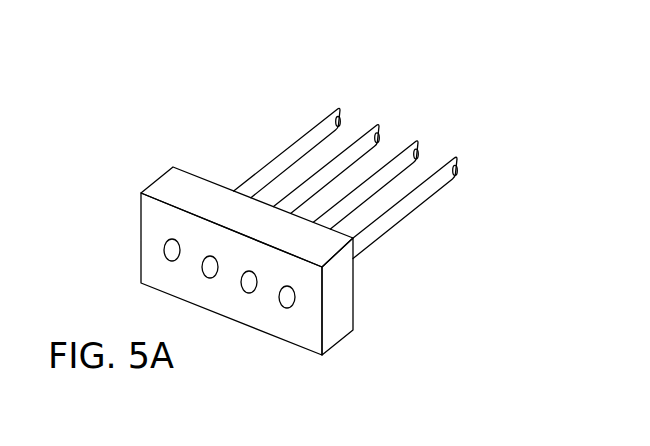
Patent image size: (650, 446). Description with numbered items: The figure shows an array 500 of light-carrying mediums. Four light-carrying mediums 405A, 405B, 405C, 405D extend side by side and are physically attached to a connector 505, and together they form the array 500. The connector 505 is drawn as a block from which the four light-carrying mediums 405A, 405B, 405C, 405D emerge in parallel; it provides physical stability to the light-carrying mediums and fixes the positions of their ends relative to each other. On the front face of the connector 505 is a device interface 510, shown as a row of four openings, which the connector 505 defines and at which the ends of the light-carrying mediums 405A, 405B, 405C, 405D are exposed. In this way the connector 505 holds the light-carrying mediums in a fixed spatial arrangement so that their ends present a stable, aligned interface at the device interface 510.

The array 500 is at (190, 112).
The connector 505 is at (342, 339).
The device interface 510 is at (262, 306).
The light-carrying medium 405A is at (315, 120).
The light-carrying medium 405B is at (353, 135).
The light-carrying medium 405C is at (392, 157).
The light-carrying medium 405D is at (430, 170).